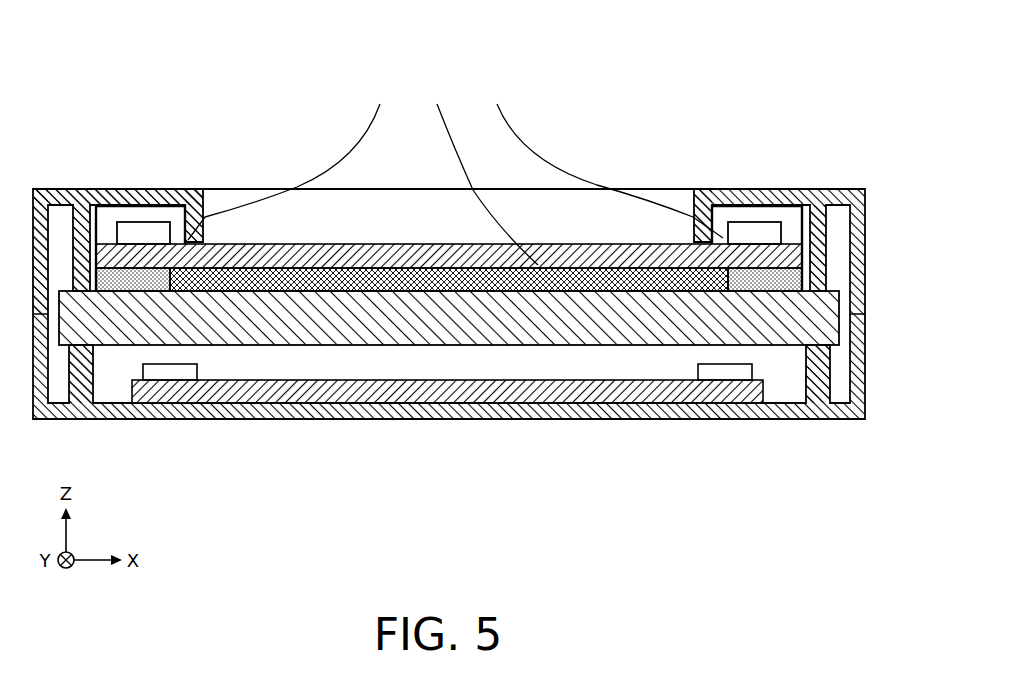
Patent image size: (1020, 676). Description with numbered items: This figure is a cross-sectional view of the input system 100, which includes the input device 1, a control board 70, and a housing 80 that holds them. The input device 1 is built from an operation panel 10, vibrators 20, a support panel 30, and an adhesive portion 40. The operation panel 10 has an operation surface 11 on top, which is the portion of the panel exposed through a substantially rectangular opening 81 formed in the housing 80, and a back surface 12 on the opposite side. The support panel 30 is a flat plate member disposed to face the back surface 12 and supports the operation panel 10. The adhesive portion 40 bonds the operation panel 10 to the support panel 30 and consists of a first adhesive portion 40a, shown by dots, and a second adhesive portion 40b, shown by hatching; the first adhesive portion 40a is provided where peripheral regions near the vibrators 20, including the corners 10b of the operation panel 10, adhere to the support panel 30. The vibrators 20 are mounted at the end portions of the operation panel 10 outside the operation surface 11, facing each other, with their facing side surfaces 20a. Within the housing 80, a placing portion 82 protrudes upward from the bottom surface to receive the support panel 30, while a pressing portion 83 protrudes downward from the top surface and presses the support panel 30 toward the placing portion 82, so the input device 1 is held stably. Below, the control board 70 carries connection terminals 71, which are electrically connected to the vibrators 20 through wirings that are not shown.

The input system 100 is at (723, 76).
The input device 1 is at (733, 186).
The operation panel 10 is at (792, 245).
The corners 10b is at (86, 245).
The operation surface 11 is at (387, 243).
The back surface 12 is at (440, 272).
The vibrators 20 is at (135, 227).
The side surfaces 20a is at (172, 233).
The support panel 30 is at (780, 330).
The adhesive portion 40 is at (455, 154).
The first adhesive portion 40a is at (455, 161).
The second adhesive portion 40b is at (477, 173).
The control board 70 is at (437, 402).
The connection terminals 71 is at (172, 372).
The housing 80 is at (165, 190).
The opening 81 is at (204, 207).
The placing portion 82 is at (92, 378).
The pressing portion 83 is at (62, 255).